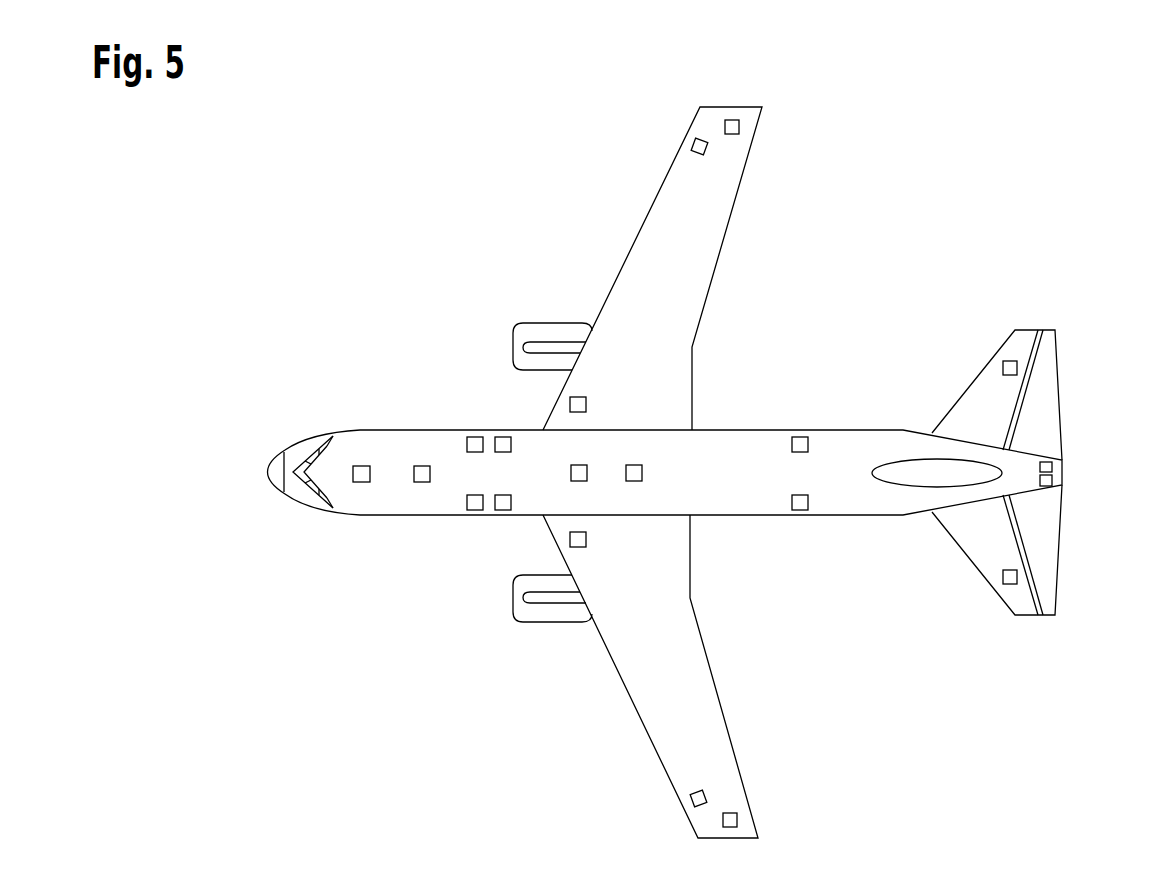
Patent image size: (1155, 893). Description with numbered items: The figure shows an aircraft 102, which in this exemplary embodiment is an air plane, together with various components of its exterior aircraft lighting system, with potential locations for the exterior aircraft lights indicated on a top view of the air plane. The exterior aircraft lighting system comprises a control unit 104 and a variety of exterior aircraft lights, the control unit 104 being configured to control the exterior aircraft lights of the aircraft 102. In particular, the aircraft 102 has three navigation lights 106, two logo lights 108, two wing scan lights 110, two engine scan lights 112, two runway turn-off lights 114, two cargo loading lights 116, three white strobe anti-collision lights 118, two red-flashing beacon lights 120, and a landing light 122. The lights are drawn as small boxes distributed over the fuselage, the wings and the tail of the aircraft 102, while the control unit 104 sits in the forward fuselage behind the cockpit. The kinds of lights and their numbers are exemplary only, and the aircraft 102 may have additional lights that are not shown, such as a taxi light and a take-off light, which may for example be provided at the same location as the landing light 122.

The aircraft 102 is at (972, 228).
The control unit 104 is at (362, 466).
The navigation lights 106 is at (693, 146).
The logo lights 108 is at (1003, 368).
The wing scan lights 110 is at (475, 437).
The engine scan lights 112 is at (503, 437).
The runway turn-off lights 114 is at (586, 405).
The cargo loading lights 116 is at (800, 437).
The white strobe anti-collision lights 118 is at (742, 127).
The red-flashing beacon lights 120 is at (586, 465).
The landing light 122 is at (420, 482).